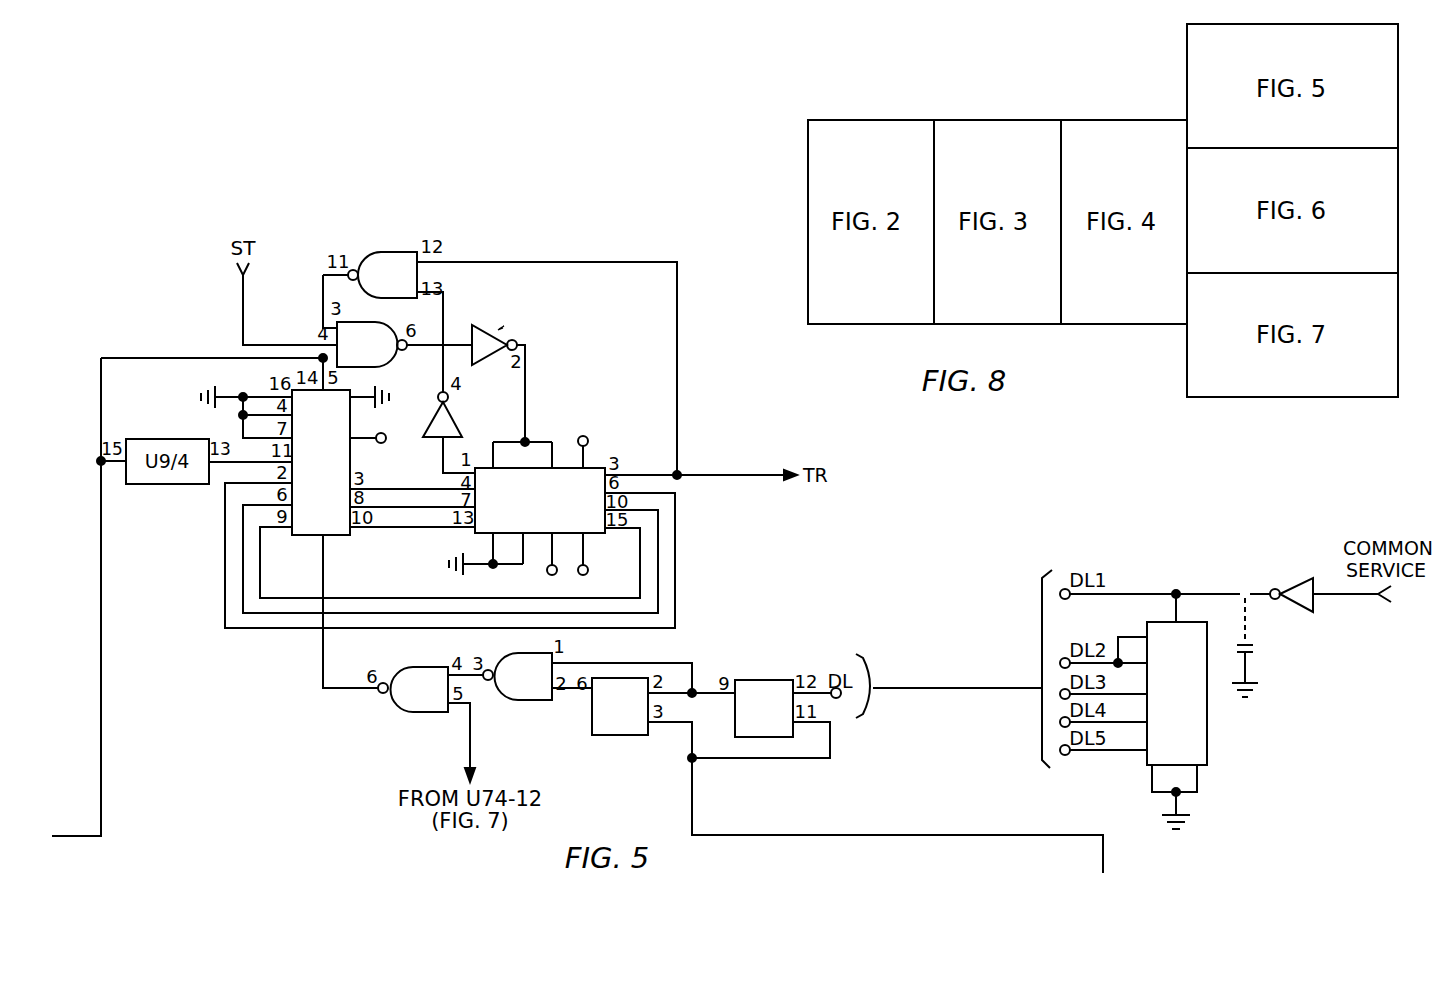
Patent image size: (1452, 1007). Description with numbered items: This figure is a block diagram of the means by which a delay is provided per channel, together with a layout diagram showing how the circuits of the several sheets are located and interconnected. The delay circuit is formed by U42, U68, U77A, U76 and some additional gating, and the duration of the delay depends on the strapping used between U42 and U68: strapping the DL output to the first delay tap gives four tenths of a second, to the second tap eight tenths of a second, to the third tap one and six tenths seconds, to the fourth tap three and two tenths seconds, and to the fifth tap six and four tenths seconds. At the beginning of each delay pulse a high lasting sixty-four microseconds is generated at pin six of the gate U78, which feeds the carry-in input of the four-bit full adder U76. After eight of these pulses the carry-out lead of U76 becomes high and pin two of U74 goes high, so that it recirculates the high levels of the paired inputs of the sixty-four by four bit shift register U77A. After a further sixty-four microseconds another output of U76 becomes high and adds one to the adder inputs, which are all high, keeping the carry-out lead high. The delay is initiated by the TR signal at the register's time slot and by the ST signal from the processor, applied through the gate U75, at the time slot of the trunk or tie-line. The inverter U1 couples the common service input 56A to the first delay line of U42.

The common service line 56A is at (1372, 594).
The element U42 is at (1177, 693).
The inverter U1 is at (1291, 583).
The element U68 is at (692, 707).
The 4-bit full adder U76 is at (321, 462).
The 64 × 4 bit shift register U77A is at (540, 500).
The gate U75 is at (372, 344).
The inverter U74 is at (472, 369).
The gate U78 is at (450, 482).